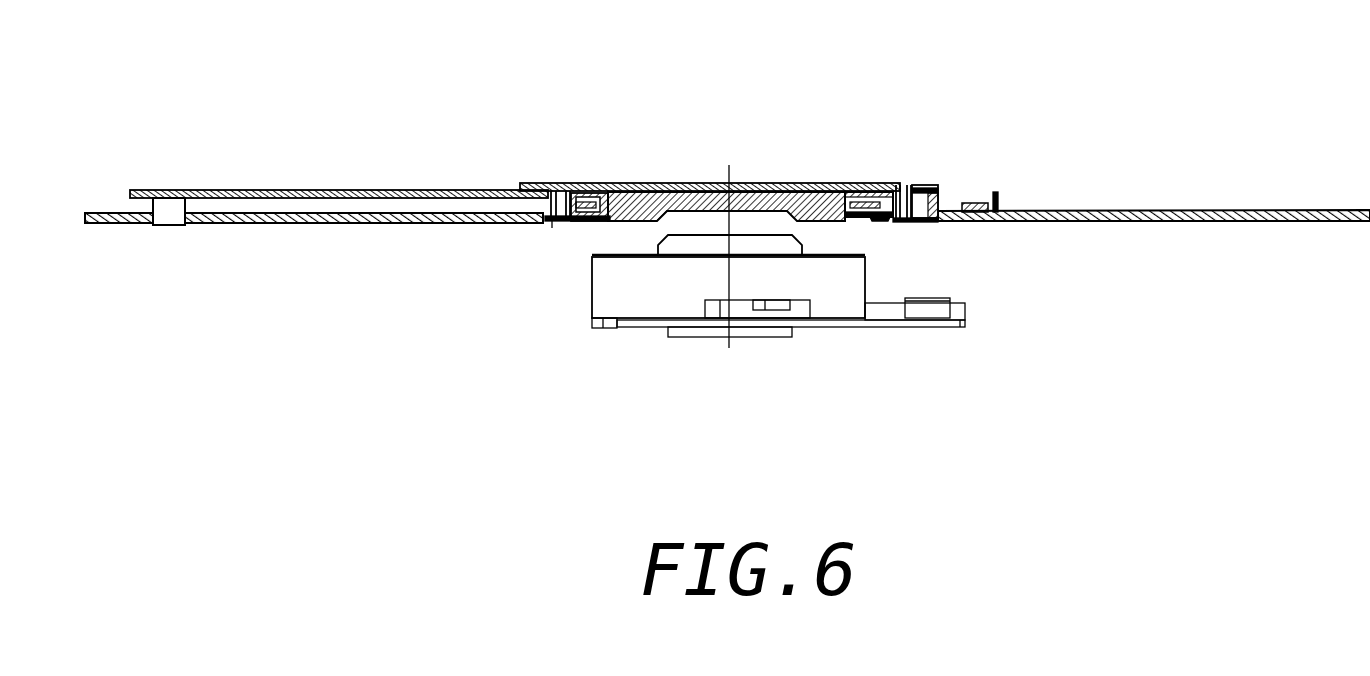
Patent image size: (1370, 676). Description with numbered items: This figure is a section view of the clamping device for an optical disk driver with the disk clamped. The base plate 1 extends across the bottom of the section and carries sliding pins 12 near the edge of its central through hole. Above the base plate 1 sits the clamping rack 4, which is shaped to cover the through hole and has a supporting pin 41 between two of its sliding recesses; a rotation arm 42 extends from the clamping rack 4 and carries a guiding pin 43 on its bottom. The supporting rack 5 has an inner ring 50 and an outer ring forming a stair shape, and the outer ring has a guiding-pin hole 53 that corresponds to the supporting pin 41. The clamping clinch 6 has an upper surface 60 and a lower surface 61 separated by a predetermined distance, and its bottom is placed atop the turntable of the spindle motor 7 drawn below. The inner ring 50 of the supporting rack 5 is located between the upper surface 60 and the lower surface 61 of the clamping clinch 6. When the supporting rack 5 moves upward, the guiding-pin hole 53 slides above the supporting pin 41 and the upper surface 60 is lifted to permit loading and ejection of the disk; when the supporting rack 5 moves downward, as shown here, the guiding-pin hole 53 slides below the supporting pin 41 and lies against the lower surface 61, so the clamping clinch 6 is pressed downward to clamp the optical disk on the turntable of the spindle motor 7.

The base plate 1 is at (1205, 211).
The clamping rack 4 is at (775, 183).
The supporting rack 5 is at (938, 192).
The clamping clinch 6 is at (642, 183).
The spindle motor 7 is at (603, 288).
The sliding pin 12 is at (985, 203).
The supporting pin 41 is at (923, 222).
The rotation arm 42 is at (385, 190).
The guiding pin 43 is at (168, 208).
The inner ring 50 is at (578, 215).
The guiding-pin hole 53 is at (928, 185).
The upper surface 60 is at (877, 183).
The lower surface 61 is at (878, 222).